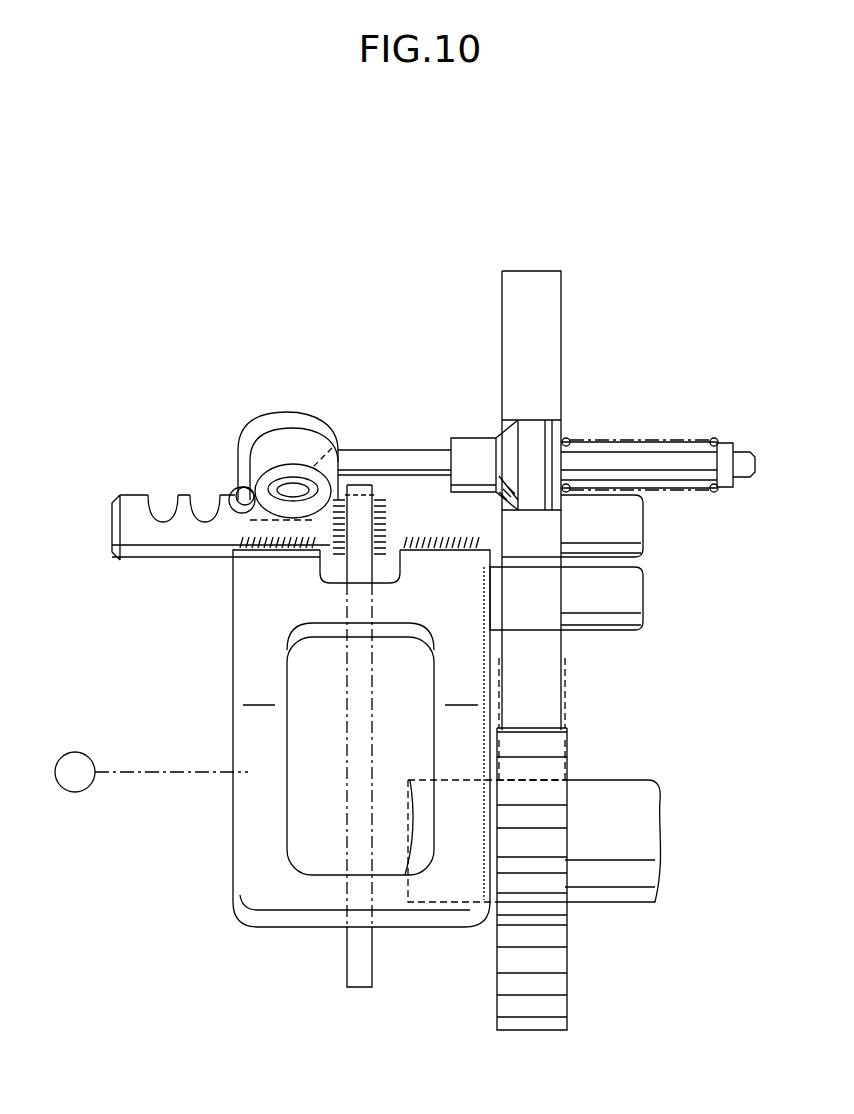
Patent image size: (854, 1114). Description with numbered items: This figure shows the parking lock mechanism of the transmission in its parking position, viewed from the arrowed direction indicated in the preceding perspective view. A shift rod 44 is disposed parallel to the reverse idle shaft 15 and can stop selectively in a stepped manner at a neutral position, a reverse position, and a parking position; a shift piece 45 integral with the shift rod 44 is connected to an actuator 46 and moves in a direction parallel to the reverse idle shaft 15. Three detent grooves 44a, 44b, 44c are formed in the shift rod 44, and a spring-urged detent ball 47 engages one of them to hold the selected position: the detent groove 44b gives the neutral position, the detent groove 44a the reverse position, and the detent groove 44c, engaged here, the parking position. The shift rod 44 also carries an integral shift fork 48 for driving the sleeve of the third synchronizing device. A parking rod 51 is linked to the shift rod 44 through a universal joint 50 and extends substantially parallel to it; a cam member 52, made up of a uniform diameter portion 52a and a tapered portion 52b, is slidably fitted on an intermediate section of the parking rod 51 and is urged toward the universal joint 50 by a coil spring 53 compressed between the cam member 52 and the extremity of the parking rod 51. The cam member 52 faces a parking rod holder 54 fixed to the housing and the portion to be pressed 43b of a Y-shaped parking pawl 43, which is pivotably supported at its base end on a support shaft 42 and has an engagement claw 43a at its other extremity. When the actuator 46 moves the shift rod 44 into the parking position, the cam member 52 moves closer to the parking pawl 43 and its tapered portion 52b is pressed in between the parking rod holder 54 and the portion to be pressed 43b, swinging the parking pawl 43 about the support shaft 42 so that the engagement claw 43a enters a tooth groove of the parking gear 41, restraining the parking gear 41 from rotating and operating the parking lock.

The reverse idle shaft 15 is at (640, 792).
The parking gear 41 is at (580, 982).
The support shaft 42 is at (628, 622).
The parking pawl 43 is at (575, 648).
The engagement claw 43a is at (563, 722).
The portion to be pressed 43b is at (545, 530).
The shift rod 44 is at (150, 566).
The detent groove 44a is at (162, 518).
The detent groove 44b is at (205, 518).
The detent groove 44c is at (240, 512).
The shift piece 45 is at (242, 795).
The actuator 46 is at (75, 792).
The detent ball 47 is at (240, 470).
The shift fork 48 is at (352, 730).
The universal joint 50 is at (303, 440).
The parking rod 51 is at (412, 462).
The cam member 52 is at (548, 412).
The uniform diameter portion 52a is at (531, 432).
The tapered portion 52b is at (497, 440).
The coil spring 53 is at (718, 442).
The parking rod holder 54 is at (552, 307).